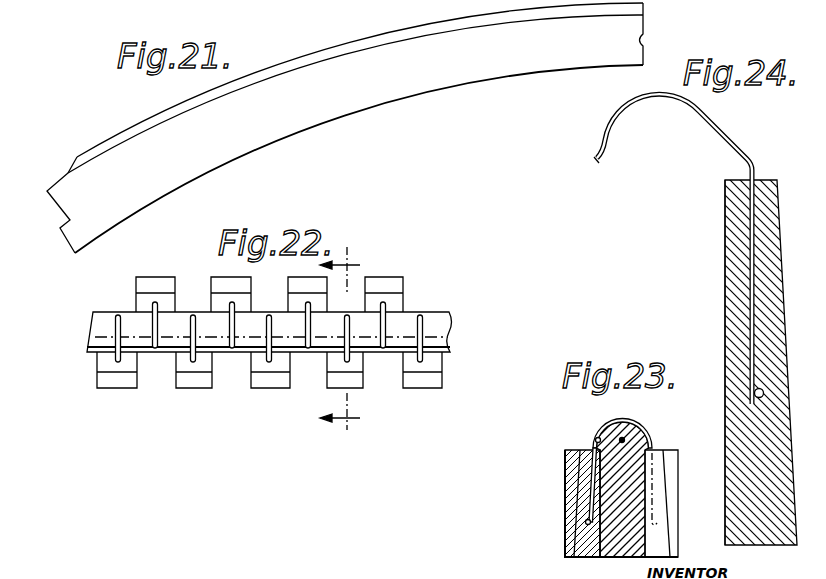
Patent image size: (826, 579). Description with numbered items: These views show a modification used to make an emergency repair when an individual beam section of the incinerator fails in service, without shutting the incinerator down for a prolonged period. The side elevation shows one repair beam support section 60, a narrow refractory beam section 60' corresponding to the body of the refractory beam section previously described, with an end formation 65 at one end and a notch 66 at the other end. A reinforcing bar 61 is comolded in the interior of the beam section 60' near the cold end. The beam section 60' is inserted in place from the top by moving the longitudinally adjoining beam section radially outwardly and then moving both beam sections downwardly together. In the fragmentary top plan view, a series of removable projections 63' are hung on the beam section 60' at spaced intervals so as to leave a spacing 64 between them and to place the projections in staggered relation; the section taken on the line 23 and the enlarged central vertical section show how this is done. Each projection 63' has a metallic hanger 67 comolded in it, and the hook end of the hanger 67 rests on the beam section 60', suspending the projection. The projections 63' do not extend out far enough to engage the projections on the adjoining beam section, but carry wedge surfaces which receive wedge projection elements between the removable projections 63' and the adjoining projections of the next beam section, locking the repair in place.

In FIG. 21, the curved strip 60 is at (355, 86).
In FIG. 21, the narrow refractory beam section 60' is at (359, 159).
In FIG. 22, the narrow refractory beam section 60' is at (289, 330).
In FIG. 23, the narrow refractory beam section 60' is at (583, 489).
In FIG. 21, the end tongue 65 is at (78, 203).
In FIG. 21, the notch 66 is at (645, 40).
In FIG. 22, the spacing 64 is at (193, 303).
In FIG. 22, the projections 63' is at (406, 334).
In FIG. 23, the projections 63' is at (615, 507).
In FIG. 24, the projections 63' is at (703, 362).
In FIG. 22, the metallic hangers 67 is at (117, 328).
In FIG. 23, the metallic hangers 67 is at (610, 432).
In FIG. 24, the metallic hangers 67 is at (717, 130).
In FIG. 23, the reinforcing bar 61 is at (624, 438).
In FIG. 22, the section line 23 is at (353, 338).